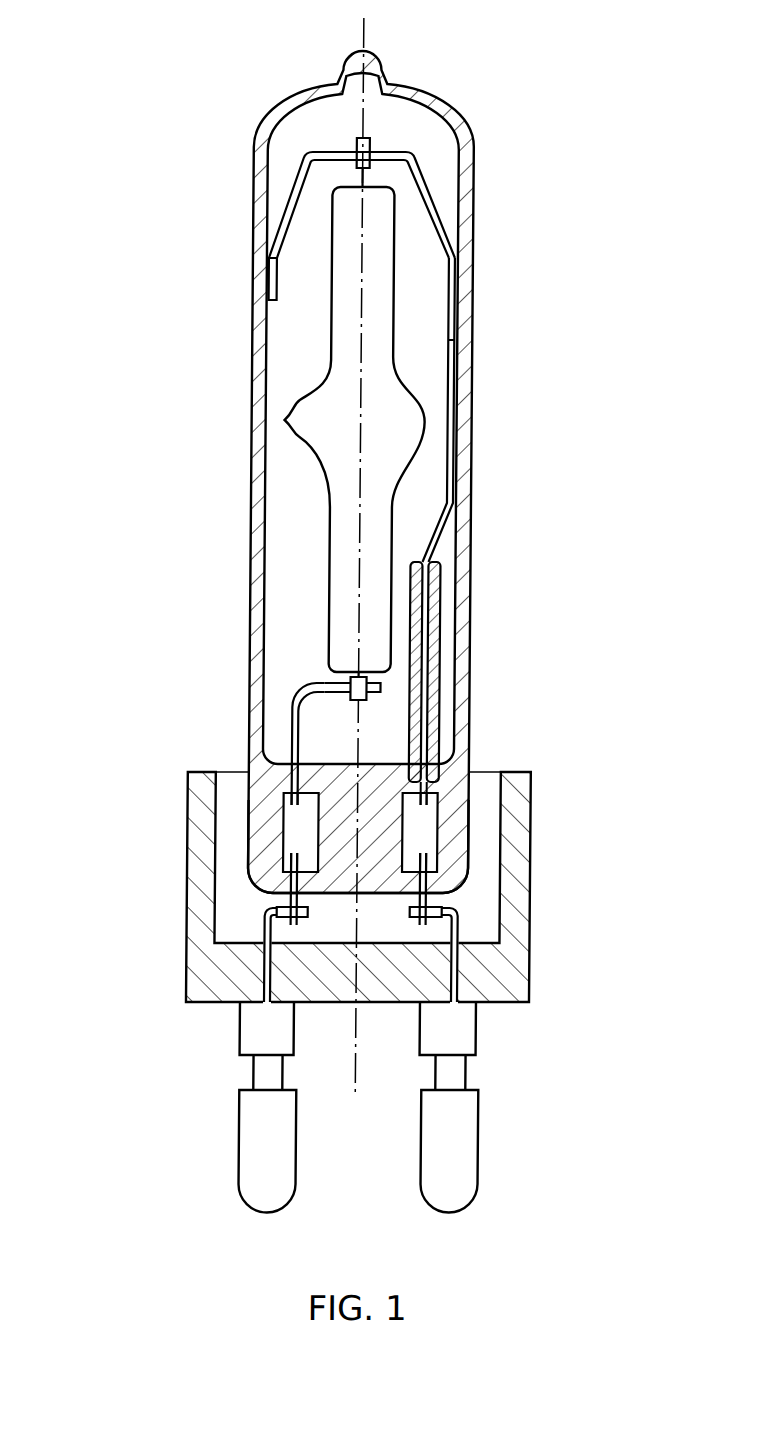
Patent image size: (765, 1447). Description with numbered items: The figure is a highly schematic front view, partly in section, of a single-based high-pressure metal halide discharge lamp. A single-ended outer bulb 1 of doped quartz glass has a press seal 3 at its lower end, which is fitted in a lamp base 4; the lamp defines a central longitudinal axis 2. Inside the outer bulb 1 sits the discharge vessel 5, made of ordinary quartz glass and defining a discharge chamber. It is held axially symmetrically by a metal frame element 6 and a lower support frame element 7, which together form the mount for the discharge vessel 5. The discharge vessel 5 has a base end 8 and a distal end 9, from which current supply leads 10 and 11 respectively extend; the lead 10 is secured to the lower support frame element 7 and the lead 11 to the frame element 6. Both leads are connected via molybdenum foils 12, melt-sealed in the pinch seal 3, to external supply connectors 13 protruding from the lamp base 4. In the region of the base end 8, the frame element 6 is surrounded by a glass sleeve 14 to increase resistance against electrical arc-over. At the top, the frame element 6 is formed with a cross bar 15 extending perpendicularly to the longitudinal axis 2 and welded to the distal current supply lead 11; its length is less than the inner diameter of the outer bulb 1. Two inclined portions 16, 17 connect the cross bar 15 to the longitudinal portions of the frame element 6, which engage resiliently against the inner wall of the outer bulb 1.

The outer bulb 1 is at (256, 375).
The central longitudinal axis 2 is at (359, 570).
The press seal 3 is at (452, 831).
The lamp base 4 is at (535, 889).
The discharge vessel 5 is at (401, 432).
The frame element 6 is at (453, 379).
The lower support frame element 7 is at (293, 722).
The base end 8 is at (355, 610).
The distal end 9 is at (382, 245).
The current supply lead 10 is at (353, 672).
The current supply lead 11 is at (363, 178).
The molybdenum foils 12 is at (420, 845).
The external supply connectors 13 is at (461, 1172).
The glass sleeve 14 is at (443, 610).
The cross bar 15 is at (396, 147).
The inclined portion 16 is at (437, 189).
The inclined portion 17 is at (277, 228).